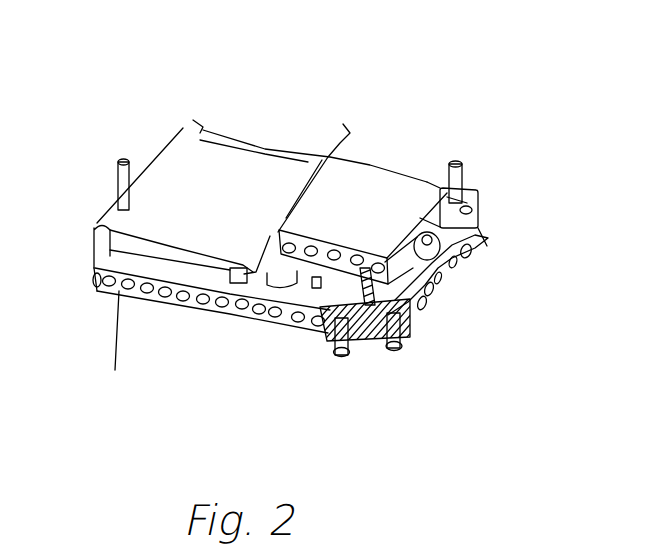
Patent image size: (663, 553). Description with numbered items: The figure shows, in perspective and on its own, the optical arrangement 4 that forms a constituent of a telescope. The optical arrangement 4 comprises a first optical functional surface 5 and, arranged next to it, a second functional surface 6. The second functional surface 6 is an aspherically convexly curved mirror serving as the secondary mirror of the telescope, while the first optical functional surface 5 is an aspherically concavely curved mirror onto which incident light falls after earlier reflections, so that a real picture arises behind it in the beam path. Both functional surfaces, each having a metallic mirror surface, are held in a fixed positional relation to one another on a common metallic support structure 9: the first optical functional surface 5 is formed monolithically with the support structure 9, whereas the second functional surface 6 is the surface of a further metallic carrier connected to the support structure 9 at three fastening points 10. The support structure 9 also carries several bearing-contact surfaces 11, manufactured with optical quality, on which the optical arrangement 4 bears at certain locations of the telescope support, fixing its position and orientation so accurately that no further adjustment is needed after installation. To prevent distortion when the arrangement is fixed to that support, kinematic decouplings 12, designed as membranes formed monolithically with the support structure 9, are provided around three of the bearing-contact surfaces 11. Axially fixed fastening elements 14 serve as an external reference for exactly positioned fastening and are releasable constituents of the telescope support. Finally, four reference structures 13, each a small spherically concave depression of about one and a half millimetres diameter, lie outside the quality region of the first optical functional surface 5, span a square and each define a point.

The optical arrangement 4 is at (480, 118).
The first optical functional surface 5 is at (260, 165).
The second functional surface 6 is at (383, 159).
The support structure 9 is at (209, 225).
The fastening points 10 is at (404, 224).
The bearing-contact surfaces 11 is at (408, 322).
The kinematic decouplings 12 is at (393, 349).
The reference structures 13 is at (220, 274).
The fastening elements 14 is at (292, 277).